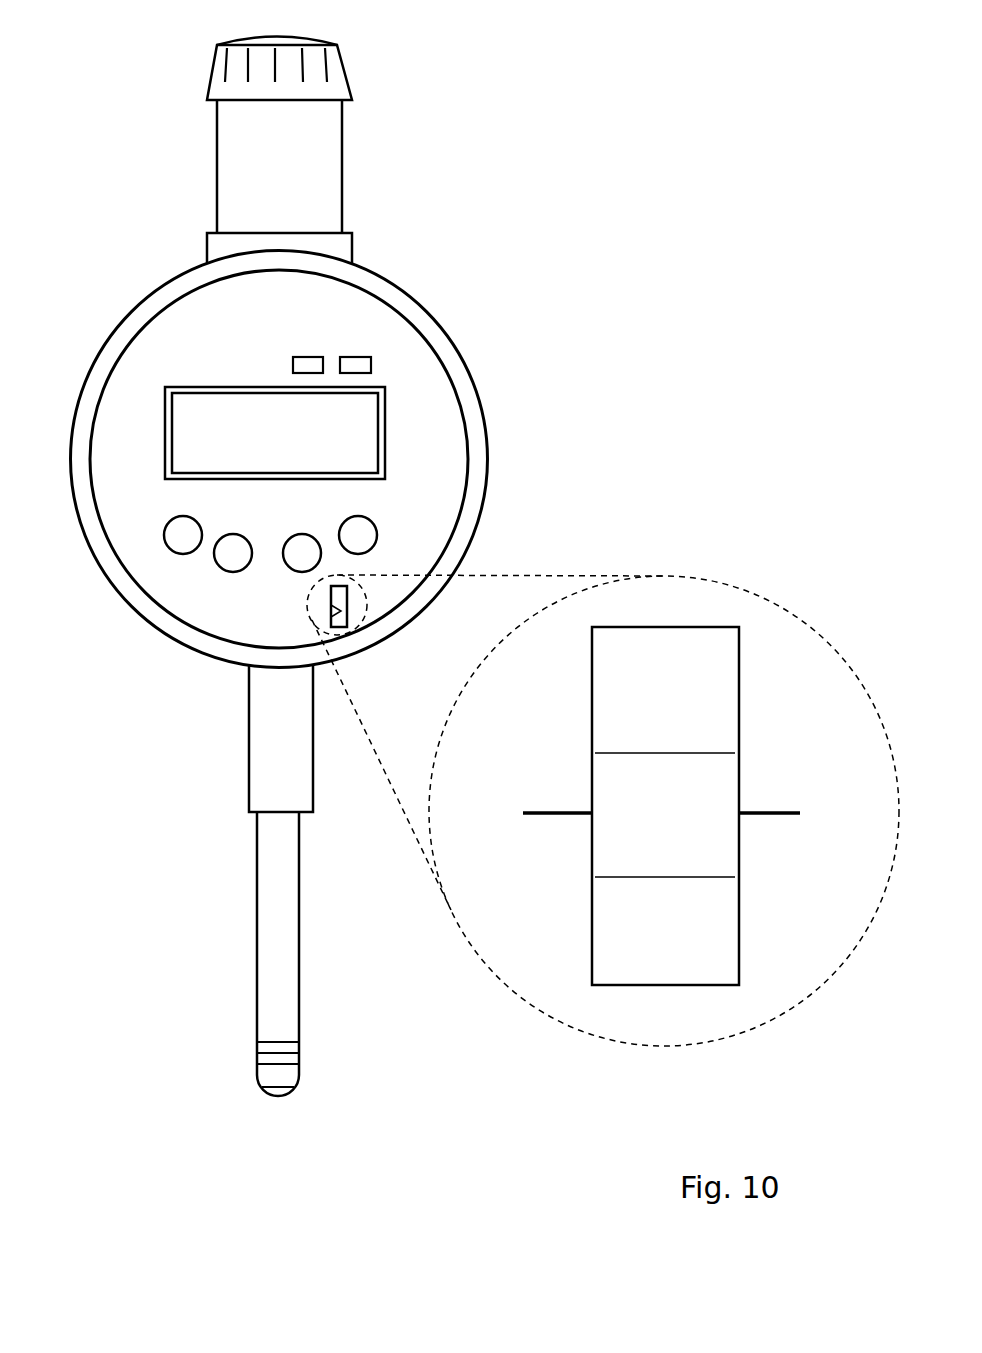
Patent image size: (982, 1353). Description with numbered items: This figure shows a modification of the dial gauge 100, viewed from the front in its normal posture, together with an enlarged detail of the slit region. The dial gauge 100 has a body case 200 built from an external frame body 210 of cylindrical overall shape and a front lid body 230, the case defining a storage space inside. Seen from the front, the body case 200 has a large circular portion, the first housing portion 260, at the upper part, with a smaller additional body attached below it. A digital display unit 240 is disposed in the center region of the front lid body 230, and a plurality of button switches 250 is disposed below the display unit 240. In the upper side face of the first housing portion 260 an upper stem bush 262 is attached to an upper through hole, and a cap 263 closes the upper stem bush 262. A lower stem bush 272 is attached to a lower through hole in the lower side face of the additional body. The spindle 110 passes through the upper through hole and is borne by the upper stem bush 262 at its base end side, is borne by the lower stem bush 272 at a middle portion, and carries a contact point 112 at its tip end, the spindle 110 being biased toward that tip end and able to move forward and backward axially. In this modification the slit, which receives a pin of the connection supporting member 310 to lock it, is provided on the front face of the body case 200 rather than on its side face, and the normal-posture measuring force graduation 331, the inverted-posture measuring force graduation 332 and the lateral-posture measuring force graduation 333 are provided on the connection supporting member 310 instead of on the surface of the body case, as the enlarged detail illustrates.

The dial gauge 100 is at (472, 206).
The spindle 110 is at (289, 887).
The contact point 112 is at (278, 1091).
The body case 200 is at (440, 335).
The external frame body 210 is at (470, 387).
The front lid body 230 is at (135, 353).
The display unit 240 is at (208, 393).
The switches 250 is at (182, 537).
The first housing portion 260 is at (470, 492).
The upper stem bush 262 is at (333, 132).
The cap 263 is at (338, 67).
The lower stem bush 272 is at (258, 732).
The connection supporting member 310 is at (710, 740).
The normal-posture measuring force graduation 331 is at (663, 672).
The inverted-posture measuring force graduation 332 is at (627, 672).
The lateral-posture measuring force graduation 333 is at (712, 672).